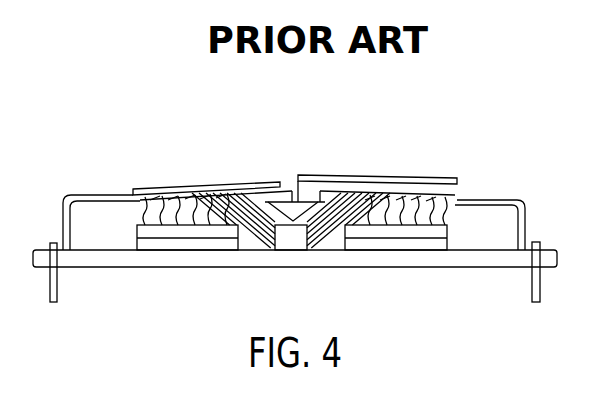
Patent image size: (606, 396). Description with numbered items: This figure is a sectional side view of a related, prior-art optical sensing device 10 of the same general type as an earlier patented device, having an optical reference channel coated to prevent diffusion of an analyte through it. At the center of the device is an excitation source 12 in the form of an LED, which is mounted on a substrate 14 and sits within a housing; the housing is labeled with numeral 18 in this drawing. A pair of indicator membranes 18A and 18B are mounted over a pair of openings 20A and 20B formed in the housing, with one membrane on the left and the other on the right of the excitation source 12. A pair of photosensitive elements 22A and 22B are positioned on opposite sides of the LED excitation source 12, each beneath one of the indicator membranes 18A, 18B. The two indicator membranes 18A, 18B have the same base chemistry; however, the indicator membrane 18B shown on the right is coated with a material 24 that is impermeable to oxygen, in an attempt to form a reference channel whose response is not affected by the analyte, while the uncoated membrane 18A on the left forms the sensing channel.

The optical sensing device 10 is at (477, 134).
The excitation source 12 is at (287, 251).
The substrate 14 is at (102, 269).
The housing 18 is at (83, 194).
The indicator membrane 18A is at (132, 190).
The indicator membrane 18B is at (458, 194).
The opening 20A is at (146, 215).
The opening 20B is at (440, 212).
The photosensitive element 22A is at (173, 251).
The photosensitive element 22B is at (397, 251).
The material impermeable to oxygen 24 is at (299, 178).